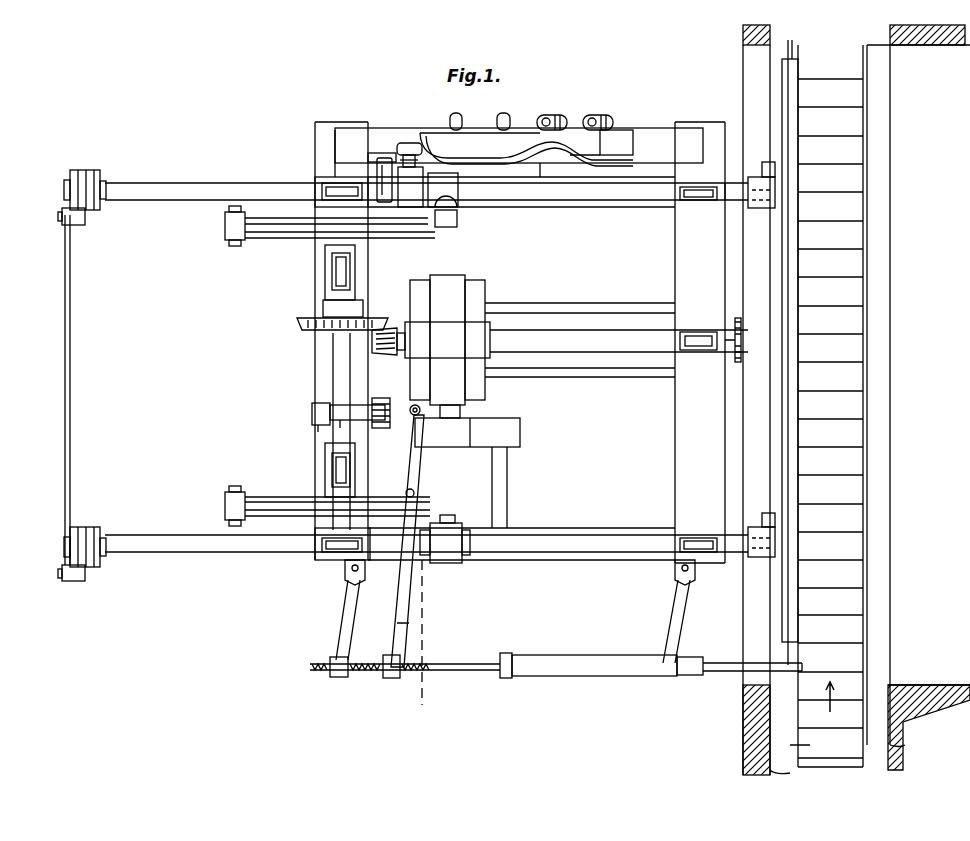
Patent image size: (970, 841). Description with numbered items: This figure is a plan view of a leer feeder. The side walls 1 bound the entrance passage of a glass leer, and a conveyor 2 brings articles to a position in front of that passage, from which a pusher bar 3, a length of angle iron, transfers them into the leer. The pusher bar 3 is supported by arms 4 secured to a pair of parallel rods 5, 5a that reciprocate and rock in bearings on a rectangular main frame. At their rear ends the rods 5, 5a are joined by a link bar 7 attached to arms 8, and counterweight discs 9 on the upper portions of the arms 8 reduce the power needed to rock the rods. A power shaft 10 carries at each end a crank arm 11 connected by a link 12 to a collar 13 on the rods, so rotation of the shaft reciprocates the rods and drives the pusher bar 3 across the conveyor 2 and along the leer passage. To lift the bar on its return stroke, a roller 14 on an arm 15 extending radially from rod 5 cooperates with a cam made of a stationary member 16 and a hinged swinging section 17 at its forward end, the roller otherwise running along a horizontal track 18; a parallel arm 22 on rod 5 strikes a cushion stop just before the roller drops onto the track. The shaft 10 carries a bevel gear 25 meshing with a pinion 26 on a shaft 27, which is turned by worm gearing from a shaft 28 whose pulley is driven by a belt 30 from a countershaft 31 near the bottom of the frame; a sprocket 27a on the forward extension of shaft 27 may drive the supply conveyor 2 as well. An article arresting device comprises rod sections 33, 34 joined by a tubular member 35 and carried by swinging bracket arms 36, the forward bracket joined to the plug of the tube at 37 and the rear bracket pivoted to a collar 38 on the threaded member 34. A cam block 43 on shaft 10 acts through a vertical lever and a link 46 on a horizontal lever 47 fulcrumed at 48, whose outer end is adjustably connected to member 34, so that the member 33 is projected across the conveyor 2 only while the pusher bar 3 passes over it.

The side walls 1 is at (745, 92).
The conveyor 2 is at (855, 350).
The pusher bar 3 is at (797, 270).
The arms 4 is at (768, 172).
The rod 5 is at (183, 192).
The rod 5a is at (230, 552).
The link bar 7 is at (72, 308).
The arms 8 is at (74, 224).
The counterweight discs 9 is at (90, 172).
The power shaft 10 is at (333, 358).
The crank arm 11 is at (288, 238).
The link 12 is at (408, 228).
The collar 13 is at (455, 205).
The roller 14 is at (408, 143).
The arm 15 is at (410, 208).
The stationary cam member 16 is at (470, 145).
The swinging cam section 17 is at (576, 130).
The horizontal track 18 is at (540, 178).
The arm 22 is at (365, 180).
The bevel gear 25 is at (300, 322).
The pinion 26 is at (390, 328).
The shaft 27 is at (557, 336).
The sprocket 27a is at (735, 360).
The shaft 28 is at (460, 410).
The belt 30 is at (520, 435).
The countershaft 31 is at (515, 498).
The restraining rod section 33 is at (716, 675).
The restraining rod section 34 is at (460, 664).
The tubular member 35 is at (578, 656).
The bracket arms 36 is at (345, 608).
The connection 37 is at (688, 676).
The collar 38 is at (339, 677).
The cam block 43 is at (340, 408).
The link 46 is at (398, 424).
The horizontal lever 47 is at (405, 460).
The fulcrum 48 is at (416, 492).